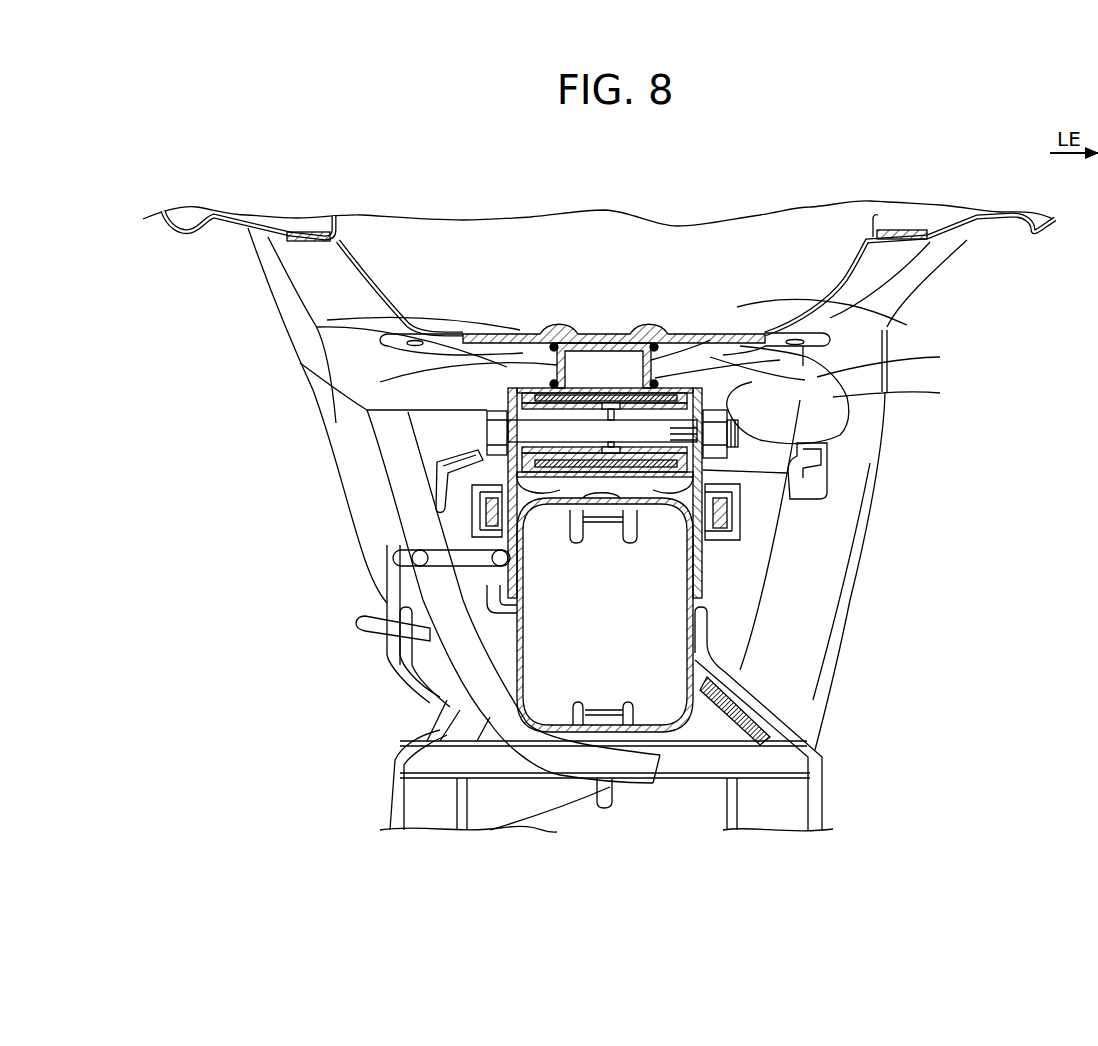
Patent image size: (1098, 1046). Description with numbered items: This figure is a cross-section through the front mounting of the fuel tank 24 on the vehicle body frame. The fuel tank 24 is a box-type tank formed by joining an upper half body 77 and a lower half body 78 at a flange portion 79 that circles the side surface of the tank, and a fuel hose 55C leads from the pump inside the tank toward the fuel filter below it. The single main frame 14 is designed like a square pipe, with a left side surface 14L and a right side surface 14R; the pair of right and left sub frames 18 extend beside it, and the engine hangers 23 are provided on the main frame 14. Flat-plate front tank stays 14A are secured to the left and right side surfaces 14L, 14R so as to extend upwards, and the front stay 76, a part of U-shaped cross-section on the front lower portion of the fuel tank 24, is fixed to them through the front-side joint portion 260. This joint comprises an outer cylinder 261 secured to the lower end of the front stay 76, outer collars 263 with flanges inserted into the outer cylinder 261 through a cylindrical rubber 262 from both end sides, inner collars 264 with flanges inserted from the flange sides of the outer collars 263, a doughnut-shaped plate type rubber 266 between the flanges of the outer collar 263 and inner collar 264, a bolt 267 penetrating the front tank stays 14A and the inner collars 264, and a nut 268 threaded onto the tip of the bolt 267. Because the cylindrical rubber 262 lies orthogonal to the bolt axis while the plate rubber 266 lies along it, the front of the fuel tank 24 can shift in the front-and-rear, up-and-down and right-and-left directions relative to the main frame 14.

The main frame 14 is at (690, 712).
The front tank stays 14A is at (703, 547).
The left side surface 14L is at (705, 612).
The right side surface 14R is at (475, 645).
The sub frames 18 is at (370, 525).
The engine hangers 23 is at (780, 718).
The fuel tank 24 is at (256, 268).
The fuel hose 55C is at (815, 372).
The front stay 76 is at (510, 370).
The upper half body 77 is at (925, 226).
The lower half body 78 is at (302, 292).
The flange portion 79 is at (318, 240).
The front-side joint portion 260 is at (668, 372).
The outer cylinder 261 is at (665, 395).
The cylindrical rubber 262 is at (593, 392).
The outer collars 263 is at (735, 330).
The inner collars 264 is at (735, 445).
The doughnut-shaped plate type rubber 266 is at (828, 478).
The bolt 267 is at (487, 438).
The nut 268 is at (705, 406).